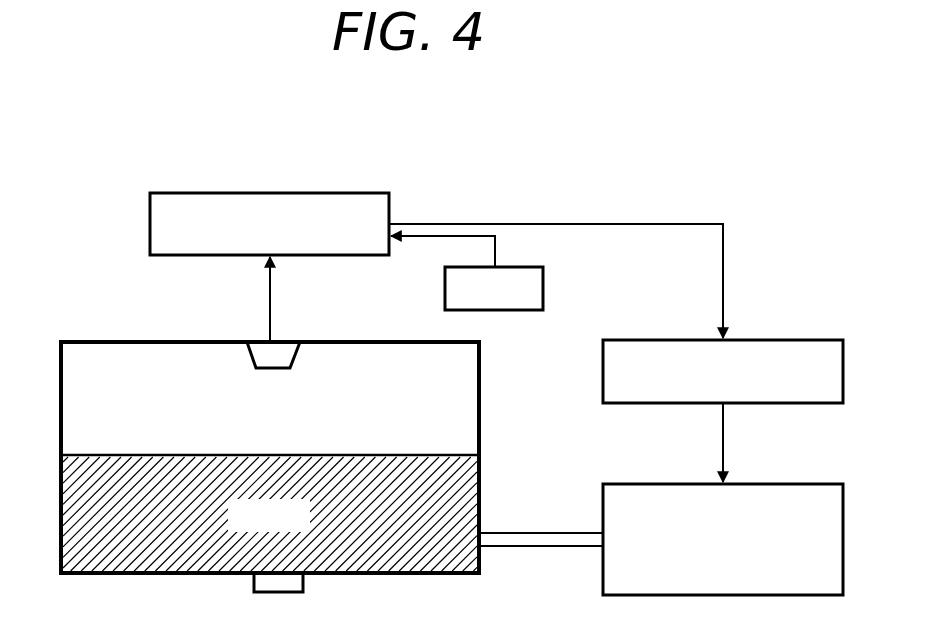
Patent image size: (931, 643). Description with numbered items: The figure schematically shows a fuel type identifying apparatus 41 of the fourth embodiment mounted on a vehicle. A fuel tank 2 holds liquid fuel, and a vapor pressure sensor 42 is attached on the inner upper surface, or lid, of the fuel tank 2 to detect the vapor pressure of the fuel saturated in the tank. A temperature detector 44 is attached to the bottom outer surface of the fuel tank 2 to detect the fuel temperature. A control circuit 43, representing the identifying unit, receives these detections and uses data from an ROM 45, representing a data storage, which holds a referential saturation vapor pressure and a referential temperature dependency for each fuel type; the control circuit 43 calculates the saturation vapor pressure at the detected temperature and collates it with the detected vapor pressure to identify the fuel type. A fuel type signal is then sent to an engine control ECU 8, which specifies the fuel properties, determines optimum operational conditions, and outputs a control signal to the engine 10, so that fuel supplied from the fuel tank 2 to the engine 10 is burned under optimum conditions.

The fuel type identifying apparatus 41 is at (198, 138).
The control circuit 43 is at (352, 193).
The ROM 45 is at (545, 280).
The engine control ECU 8 is at (818, 340).
The engine 10 is at (820, 484).
The fuel tank 2 is at (70, 342).
The vapor pressure sensor 42 is at (256, 346).
The temperature detector 44 is at (292, 593).